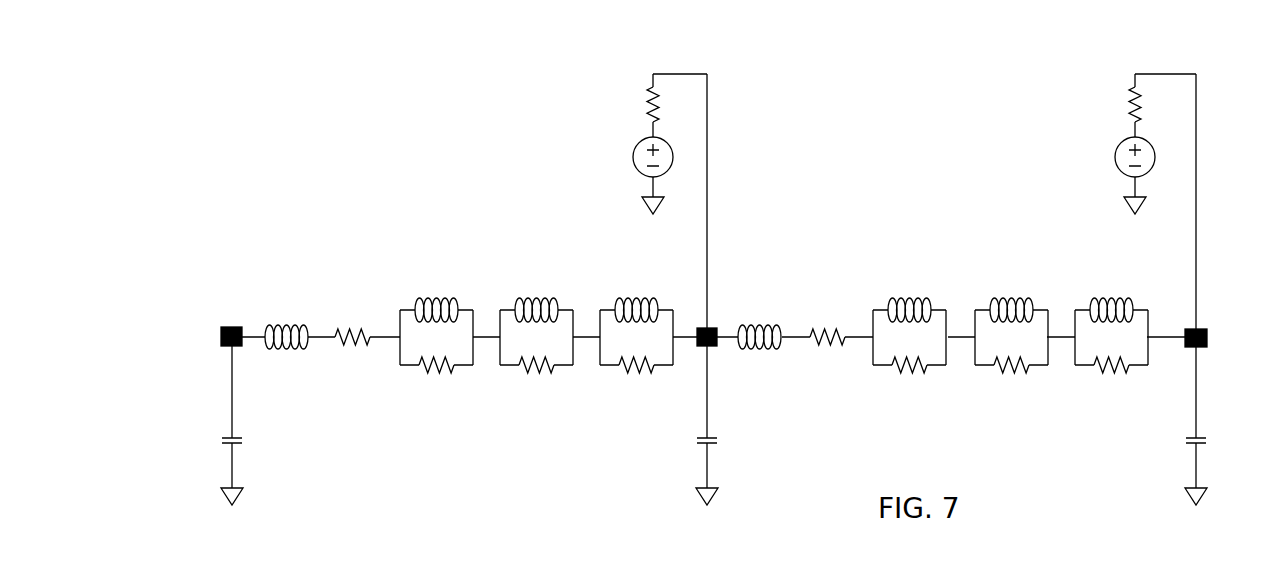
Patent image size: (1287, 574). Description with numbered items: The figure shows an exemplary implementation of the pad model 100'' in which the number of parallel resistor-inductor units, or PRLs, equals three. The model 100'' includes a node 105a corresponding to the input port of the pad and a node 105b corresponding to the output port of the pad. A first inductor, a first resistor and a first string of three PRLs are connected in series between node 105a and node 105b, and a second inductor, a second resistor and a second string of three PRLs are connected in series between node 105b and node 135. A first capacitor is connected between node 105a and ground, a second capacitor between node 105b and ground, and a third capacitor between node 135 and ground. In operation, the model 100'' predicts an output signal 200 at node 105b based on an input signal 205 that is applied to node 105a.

The model 100'' is at (744, 290).
The node 135 is at (240, 323).
The node 105b is at (722, 325).
The node 105a is at (1212, 323).
The output signal 200 is at (618, 95).
The input signal 205 is at (1104, 95).